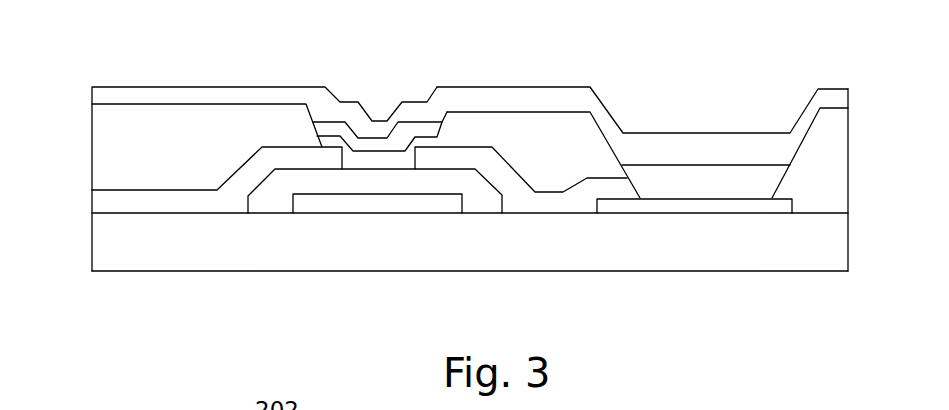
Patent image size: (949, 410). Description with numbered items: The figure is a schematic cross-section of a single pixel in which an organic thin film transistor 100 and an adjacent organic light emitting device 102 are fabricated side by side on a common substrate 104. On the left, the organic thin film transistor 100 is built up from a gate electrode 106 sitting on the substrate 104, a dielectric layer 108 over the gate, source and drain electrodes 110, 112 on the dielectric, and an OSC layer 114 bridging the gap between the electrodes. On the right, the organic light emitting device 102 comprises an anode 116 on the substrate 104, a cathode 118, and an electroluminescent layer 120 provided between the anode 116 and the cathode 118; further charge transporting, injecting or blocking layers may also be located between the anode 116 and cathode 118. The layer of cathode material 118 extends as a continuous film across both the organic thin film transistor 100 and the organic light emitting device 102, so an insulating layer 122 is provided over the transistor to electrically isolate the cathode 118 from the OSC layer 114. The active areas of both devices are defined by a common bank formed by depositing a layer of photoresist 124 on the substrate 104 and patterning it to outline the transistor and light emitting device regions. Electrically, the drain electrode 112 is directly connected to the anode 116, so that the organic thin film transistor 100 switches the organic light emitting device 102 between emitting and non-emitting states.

The organic thin film transistor 100 is at (420, 83).
The organic light emitting device 102 is at (740, 88).
The common substrate 104 is at (727, 237).
The gate electrode 106 is at (384, 218).
The dielectric layer 108 is at (454, 177).
The source electrode 110 is at (232, 197).
The drain electrode 112 is at (522, 200).
The OSC layer 114 is at (406, 152).
The anode 116 is at (767, 206).
The cathode 118 is at (772, 150).
The electroluminescent layer 120 is at (653, 187).
The insulating layer 122 is at (353, 133).
The photoresist layer 124 is at (822, 166).